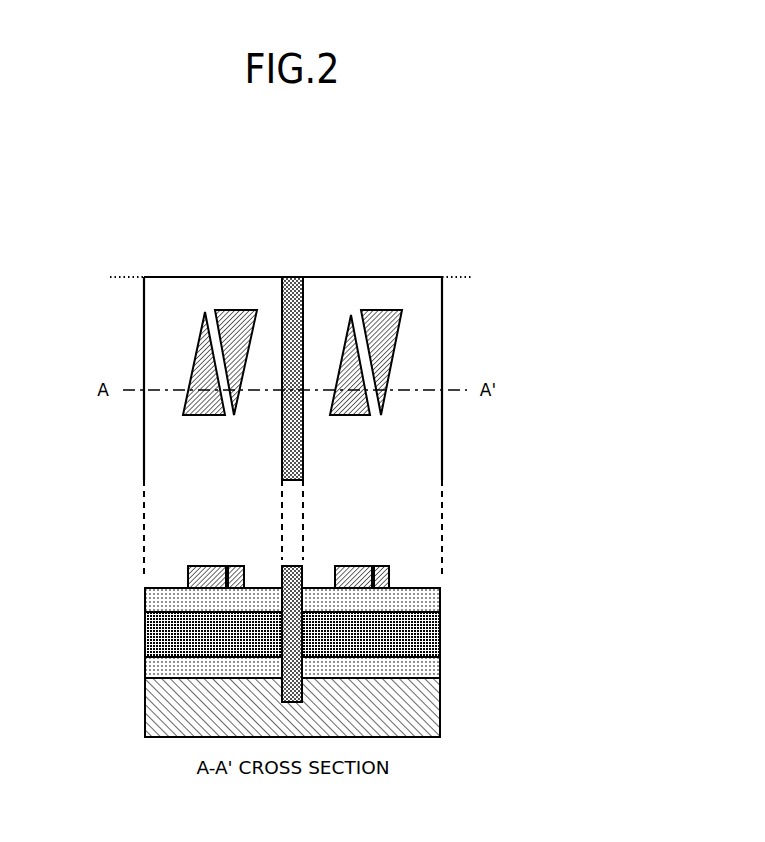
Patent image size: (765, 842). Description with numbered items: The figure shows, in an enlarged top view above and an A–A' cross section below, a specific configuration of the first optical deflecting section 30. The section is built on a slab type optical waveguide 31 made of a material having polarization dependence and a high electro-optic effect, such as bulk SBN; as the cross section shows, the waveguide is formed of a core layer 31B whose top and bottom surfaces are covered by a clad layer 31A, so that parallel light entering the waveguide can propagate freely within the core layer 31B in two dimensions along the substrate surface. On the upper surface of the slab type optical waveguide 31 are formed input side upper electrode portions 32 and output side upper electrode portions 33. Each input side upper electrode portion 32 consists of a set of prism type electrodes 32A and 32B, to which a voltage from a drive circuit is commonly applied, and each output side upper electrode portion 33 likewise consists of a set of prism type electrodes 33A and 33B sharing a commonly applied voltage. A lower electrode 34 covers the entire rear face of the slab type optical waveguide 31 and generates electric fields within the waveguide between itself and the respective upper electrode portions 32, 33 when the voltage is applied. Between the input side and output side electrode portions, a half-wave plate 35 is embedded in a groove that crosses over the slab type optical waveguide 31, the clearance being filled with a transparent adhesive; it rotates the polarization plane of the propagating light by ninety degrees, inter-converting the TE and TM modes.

The first optical deflecting section 30 is at (172, 178).
The slab type optical waveguide 31 is at (322, 289).
The clad layer 31A is at (440, 598).
The core layer 31B is at (440, 635).
The input side upper electrode portions 32 is at (148, 226).
The prism type electrode 32A is at (204, 312).
The prism type electrode 32B is at (234, 309).
The output side upper electrode portions 33 is at (437, 226).
The prism type electrode 33A is at (351, 315).
The prism type electrode 33B is at (382, 309).
The lower electrode 34 is at (440, 715).
The half-wave plate 35 is at (295, 277).